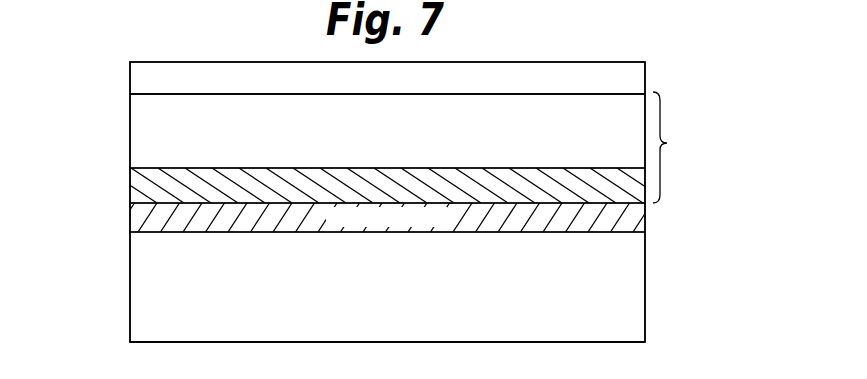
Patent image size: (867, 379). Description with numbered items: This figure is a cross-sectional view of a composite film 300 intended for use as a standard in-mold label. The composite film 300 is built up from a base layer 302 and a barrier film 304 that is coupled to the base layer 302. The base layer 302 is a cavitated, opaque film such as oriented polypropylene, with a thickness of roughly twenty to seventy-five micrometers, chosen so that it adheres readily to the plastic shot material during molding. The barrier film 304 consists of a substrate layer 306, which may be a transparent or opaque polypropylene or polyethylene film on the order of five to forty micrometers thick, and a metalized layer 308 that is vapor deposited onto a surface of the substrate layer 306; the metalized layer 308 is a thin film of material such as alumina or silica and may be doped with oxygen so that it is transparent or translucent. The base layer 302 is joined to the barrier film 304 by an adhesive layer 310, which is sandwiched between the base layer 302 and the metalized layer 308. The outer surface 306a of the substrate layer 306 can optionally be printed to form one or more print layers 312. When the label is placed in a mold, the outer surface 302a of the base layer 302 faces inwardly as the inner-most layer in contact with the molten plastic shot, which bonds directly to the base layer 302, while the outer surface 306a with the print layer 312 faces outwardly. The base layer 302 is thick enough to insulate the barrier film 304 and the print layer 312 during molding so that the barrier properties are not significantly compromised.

The composite film 300 is at (698, 62).
The print layer 312 is at (157, 70).
The outer surface of substrate layer 306a is at (145, 92).
The substrate layer 306 is at (140, 134).
The barrier film 304 is at (682, 147).
The metalized layer 308 is at (138, 189).
The adhesive layer 310 is at (644, 221).
The base layer 302 is at (635, 289).
The outer surface of base layer 302a is at (147, 341).